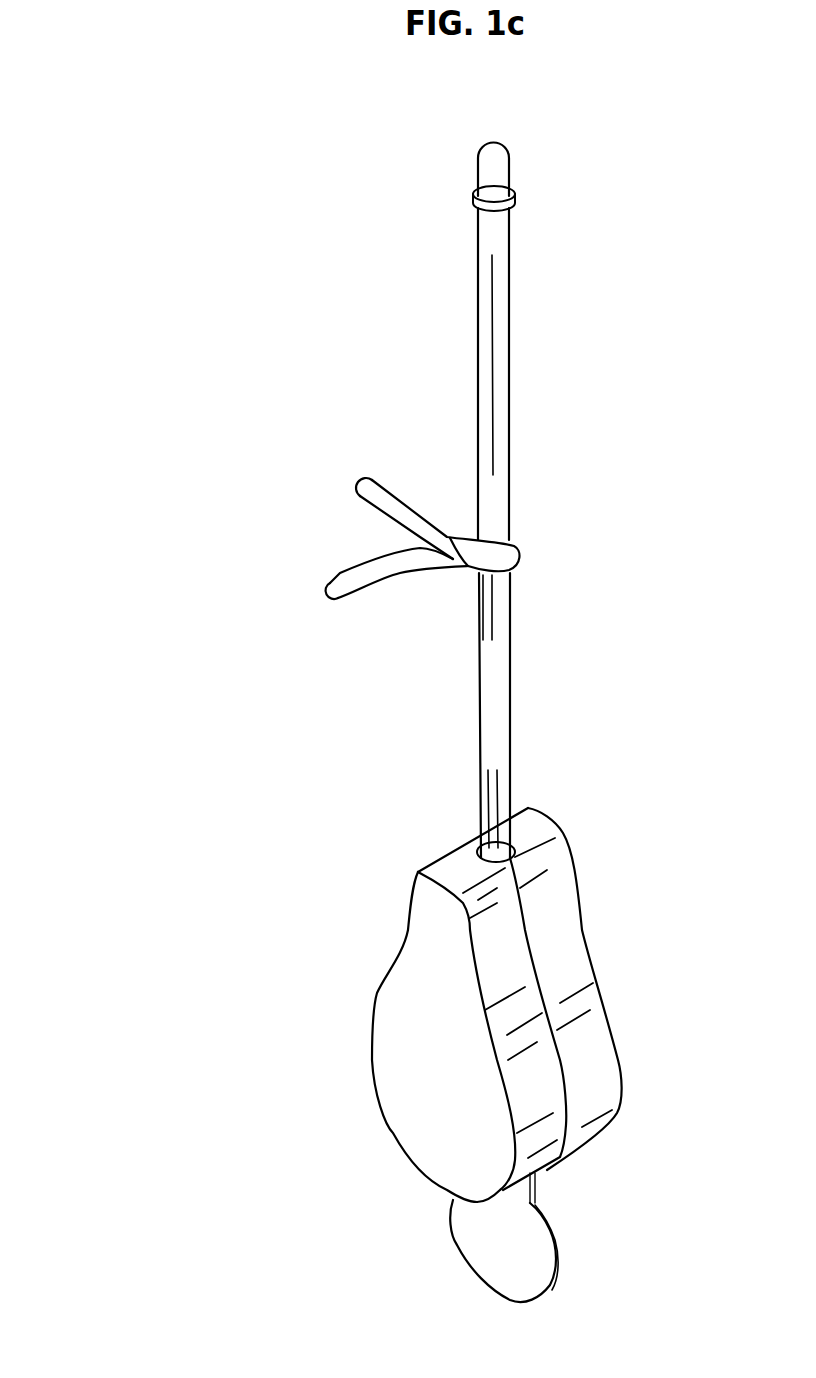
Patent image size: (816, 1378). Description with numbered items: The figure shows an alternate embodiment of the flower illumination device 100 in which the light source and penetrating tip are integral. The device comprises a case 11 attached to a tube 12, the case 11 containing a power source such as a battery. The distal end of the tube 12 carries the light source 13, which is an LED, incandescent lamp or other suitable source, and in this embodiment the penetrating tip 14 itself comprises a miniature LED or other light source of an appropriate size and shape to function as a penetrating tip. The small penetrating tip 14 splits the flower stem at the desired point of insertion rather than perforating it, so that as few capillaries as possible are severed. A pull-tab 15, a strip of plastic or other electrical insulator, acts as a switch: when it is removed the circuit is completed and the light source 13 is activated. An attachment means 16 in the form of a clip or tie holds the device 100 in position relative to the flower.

The flower illumination device 100 is at (347, 692).
The case 11 is at (575, 978).
The tube 12 is at (500, 434).
The light source 13 is at (488, 172).
The penetrating tip 14 is at (478, 150).
The pull-tab 15 is at (505, 1230).
The attachment means 16 is at (397, 508).